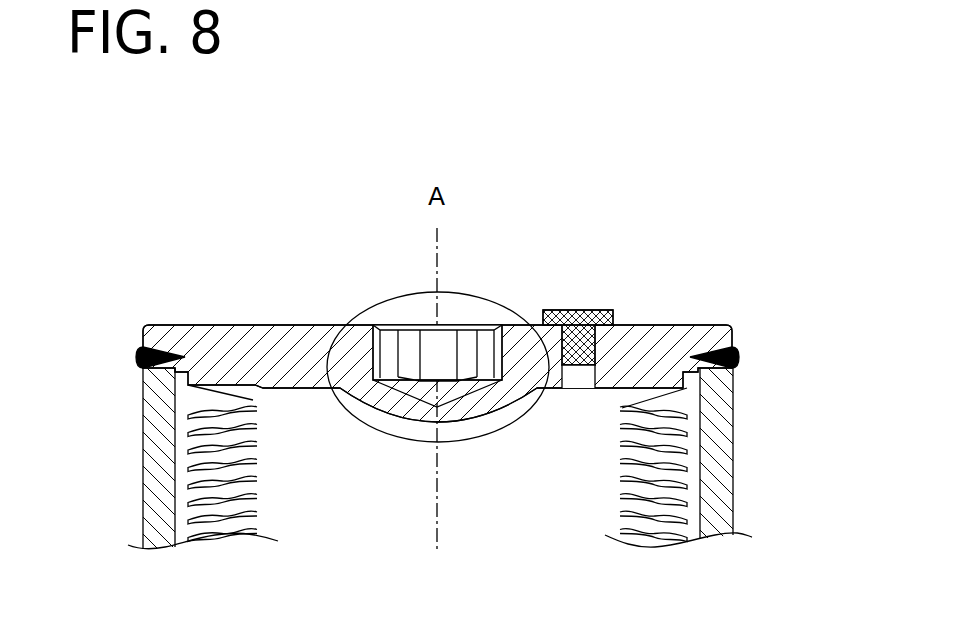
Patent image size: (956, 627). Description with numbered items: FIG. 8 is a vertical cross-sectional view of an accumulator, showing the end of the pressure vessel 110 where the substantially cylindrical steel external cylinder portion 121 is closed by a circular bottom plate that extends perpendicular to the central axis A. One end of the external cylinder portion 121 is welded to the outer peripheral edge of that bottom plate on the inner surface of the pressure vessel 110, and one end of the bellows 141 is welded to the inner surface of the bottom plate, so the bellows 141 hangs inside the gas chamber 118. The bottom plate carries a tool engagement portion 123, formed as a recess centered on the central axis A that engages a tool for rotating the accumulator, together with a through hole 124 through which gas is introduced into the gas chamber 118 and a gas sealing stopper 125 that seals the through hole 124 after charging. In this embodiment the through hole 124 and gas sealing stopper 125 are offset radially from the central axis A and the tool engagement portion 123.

The pressure vessel 110 is at (707, 210).
The gas chamber 118 is at (312, 435).
The external cylinder portion 121 is at (733, 470).
The tool engagement portion 123 is at (461, 316).
The through hole 124 is at (587, 377).
The gas sealing stopper 125 is at (577, 310).
The bellows 141 is at (622, 500).